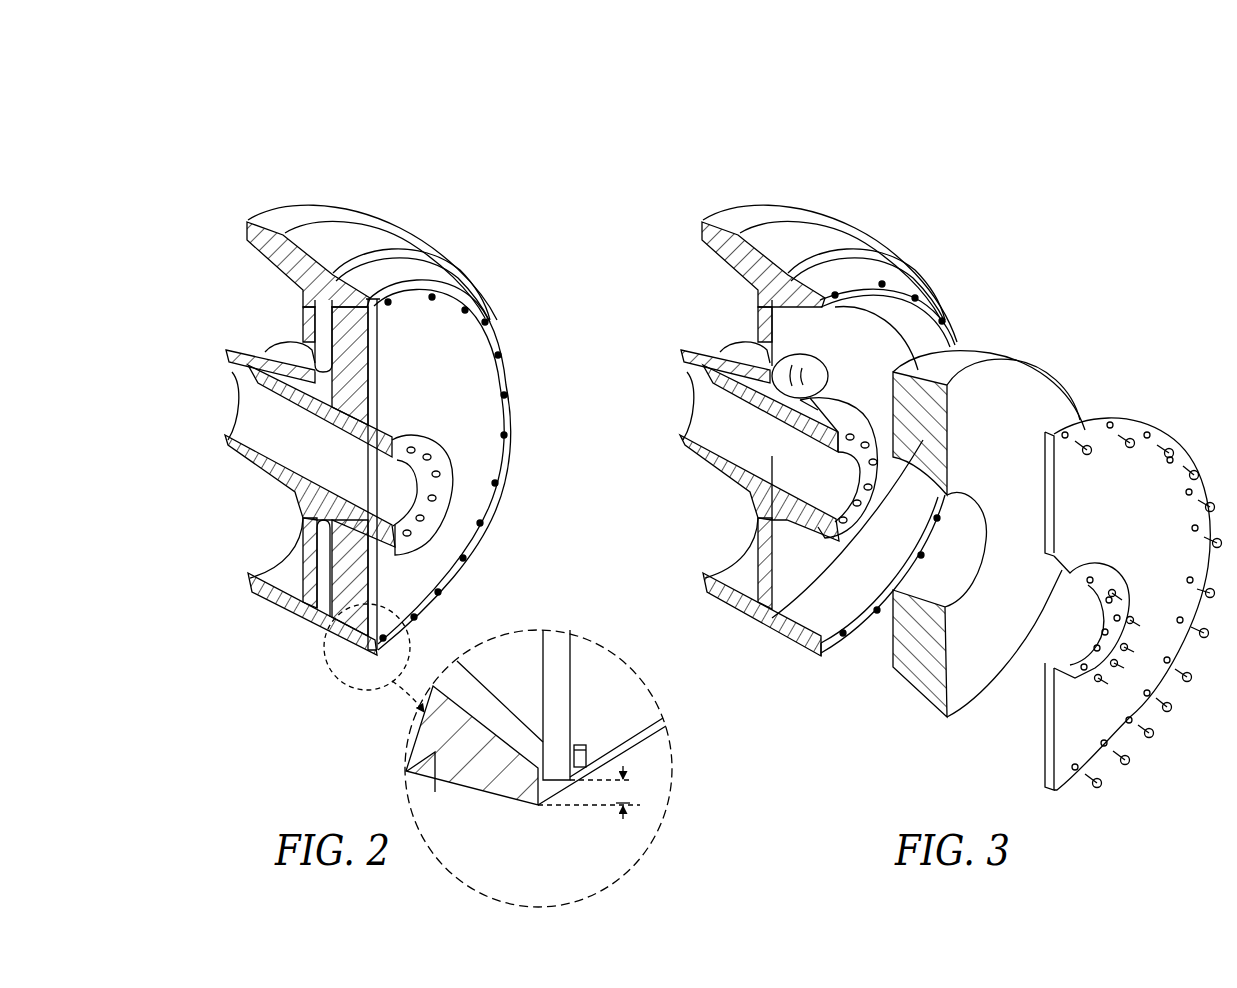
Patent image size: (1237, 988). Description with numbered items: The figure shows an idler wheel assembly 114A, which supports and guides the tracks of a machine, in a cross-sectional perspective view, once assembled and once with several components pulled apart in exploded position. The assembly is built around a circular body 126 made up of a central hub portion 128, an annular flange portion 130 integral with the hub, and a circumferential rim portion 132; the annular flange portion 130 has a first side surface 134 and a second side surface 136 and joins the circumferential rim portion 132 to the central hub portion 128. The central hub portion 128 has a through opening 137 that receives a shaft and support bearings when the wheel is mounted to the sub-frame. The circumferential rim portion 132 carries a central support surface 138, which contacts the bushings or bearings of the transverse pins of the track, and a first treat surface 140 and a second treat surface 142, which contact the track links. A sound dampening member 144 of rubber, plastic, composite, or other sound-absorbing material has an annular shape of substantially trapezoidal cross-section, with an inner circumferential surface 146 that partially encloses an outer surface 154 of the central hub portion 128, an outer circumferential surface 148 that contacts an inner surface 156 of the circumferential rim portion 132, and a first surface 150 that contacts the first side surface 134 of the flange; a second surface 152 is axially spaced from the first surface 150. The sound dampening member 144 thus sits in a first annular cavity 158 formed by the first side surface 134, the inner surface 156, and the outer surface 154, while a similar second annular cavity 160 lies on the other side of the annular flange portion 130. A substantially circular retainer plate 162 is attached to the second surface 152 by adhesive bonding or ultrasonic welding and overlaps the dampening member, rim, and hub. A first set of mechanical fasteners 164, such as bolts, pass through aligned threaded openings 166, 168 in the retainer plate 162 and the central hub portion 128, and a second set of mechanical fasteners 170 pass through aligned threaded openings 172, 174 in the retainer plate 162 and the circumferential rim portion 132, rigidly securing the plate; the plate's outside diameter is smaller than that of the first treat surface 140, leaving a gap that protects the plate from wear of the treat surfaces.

In FIG. 2, the idler wheel assembly 114A is at (196, 171).
In FIG. 3, the idler wheel assembly 114A is at (648, 171).
In FIG. 2, the circular body 126 is at (245, 581).
In FIG. 3, the circular body 126 is at (700, 581).
In FIG. 2, the central hub portion 128 is at (250, 342).
In FIG. 3, the central hub portion 128 is at (705, 342).
In FIG. 2, the annular flange portion 130 is at (300, 303).
In FIG. 3, the annular flange portion 130 is at (758, 303).
In FIG. 2, the circumferential rim portion 132 is at (246, 221).
In FIG. 3, the circumferential rim portion 132 is at (701, 221).
In FIG. 3, the first side surface 134 is at (847, 346).
In FIG. 2, the second side surface 136 is at (247, 383).
In FIG. 3, the second side surface 136 is at (702, 383).
In FIG. 2, the through opening 137 is at (258, 410).
In FIG. 3, the through opening 137 is at (713, 410).
In FIG. 2, the central support surface 138 is at (387, 230).
In FIG. 3, the central support surface 138 is at (843, 228).
In FIG. 2, the first treat surface 140 is at (460, 288).
In FIG. 3, the first treat surface 140 is at (913, 283).
In FIG. 2, the second treat surface 142 is at (305, 212).
In FIG. 3, the second treat surface 142 is at (760, 212).
In FIG. 2, the sound dampening member 144 is at (372, 598).
In FIG. 3, the sound dampening member 144 is at (913, 700).
In FIG. 3, the inner circumferential surface 146 is at (907, 640).
In FIG. 3, the outer circumferential surface 148 is at (970, 357).
In FIG. 3, the first surface 150 is at (891, 403).
In FIG. 3, the second surface 152 is at (1010, 431).
In FIG. 3, the outer surface 154 is at (805, 420).
In FIG. 3, the inner surface 156 is at (925, 338).
In FIG. 3, the first annular cavity 158 is at (818, 562).
In FIG. 3, the second annular cavity 160 is at (743, 523).
In FIG. 2, the retainer plate 162 is at (470, 537).
In FIG. 3, the retainer plate 162 is at (1040, 758).
In FIG. 3, the first set of mechanical fasteners 164 is at (1123, 617).
In FIG. 3, the threaded openings 166 is at (1080, 667).
In FIG. 3, the threaded openings 168 is at (852, 443).
In FIG. 3, the second set of mechanical fasteners 170 is at (1120, 424).
In FIG. 3, the threaded openings 172 is at (1100, 411).
In FIG. 3, the threaded openings 174 is at (877, 280).